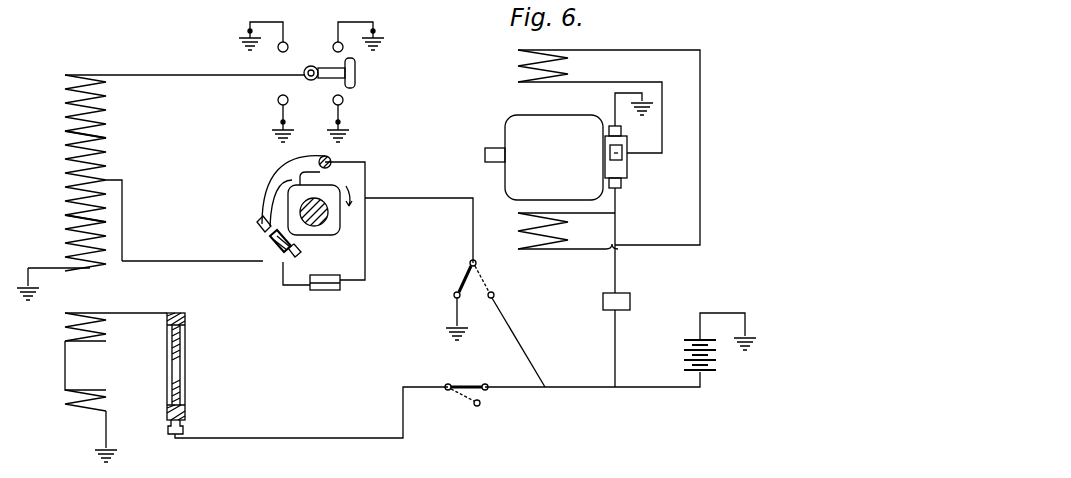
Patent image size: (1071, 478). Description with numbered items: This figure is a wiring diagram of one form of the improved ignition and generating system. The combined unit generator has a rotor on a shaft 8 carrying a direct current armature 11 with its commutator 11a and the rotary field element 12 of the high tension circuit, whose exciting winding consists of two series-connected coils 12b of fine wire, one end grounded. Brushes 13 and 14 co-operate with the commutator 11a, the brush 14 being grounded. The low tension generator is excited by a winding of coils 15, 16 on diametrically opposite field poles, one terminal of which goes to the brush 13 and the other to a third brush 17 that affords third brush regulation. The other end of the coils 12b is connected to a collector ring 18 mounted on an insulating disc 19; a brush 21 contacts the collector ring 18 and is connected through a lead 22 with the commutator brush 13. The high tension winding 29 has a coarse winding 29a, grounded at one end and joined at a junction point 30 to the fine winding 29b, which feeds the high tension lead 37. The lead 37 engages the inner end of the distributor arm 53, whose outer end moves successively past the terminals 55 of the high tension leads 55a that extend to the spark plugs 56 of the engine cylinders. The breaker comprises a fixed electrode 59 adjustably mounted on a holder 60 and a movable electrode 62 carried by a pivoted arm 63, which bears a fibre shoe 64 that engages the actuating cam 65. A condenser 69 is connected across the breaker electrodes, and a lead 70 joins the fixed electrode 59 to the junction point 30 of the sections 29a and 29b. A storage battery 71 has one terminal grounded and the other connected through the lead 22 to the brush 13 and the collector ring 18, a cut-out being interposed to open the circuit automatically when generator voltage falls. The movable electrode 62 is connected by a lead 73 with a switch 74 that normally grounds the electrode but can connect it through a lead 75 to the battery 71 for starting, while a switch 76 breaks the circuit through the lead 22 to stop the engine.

The shaft 8 is at (490, 163).
The direct current armature 11 is at (554, 157).
The commutator 11a is at (627, 170).
The rotary field element 12 is at (630, 301).
The exciting coils 12b is at (106, 342).
The commutator brush 13 is at (621, 186).
The grounded brush 14 is at (621, 131).
The exciting coil 15 is at (514, 68).
The exciting coil 16 is at (522, 232).
The third brush 17 is at (622, 152).
The collector ring 18 is at (191, 368).
The insulating disc 19 is at (185, 342).
The brush 21 is at (185, 426).
The lead 22 is at (272, 438).
The high tension winding 29 is at (66, 179).
The coarse winding 29a is at (66, 214).
The fine winding 29b is at (68, 134).
The junction point 30 is at (122, 180).
The high tension lead 37 is at (182, 75).
The distributor arm 53 is at (355, 74).
The terminals 55 is at (333, 46).
The high tension leads 55a is at (346, 107).
The spark plugs 56 is at (247, 31).
The fixed electrode 59 is at (270, 242).
The holder 60 is at (284, 256).
The movable electrode 62 is at (262, 231).
The arm 63 is at (280, 186).
The fibre shoe 64 is at (291, 180).
The actuating cam 65 is at (322, 232).
The condenser 69 is at (322, 292).
The lead 70 is at (176, 261).
The storage battery 71 is at (686, 365).
The lead 73 is at (430, 198).
The switch 74 is at (464, 281).
The lead 75 is at (525, 341).
The switch 76 is at (466, 395).